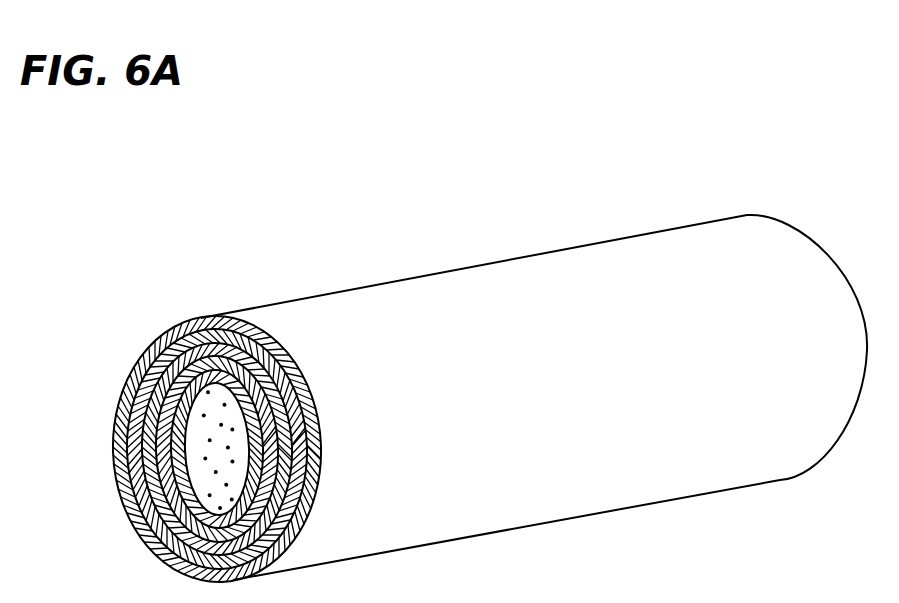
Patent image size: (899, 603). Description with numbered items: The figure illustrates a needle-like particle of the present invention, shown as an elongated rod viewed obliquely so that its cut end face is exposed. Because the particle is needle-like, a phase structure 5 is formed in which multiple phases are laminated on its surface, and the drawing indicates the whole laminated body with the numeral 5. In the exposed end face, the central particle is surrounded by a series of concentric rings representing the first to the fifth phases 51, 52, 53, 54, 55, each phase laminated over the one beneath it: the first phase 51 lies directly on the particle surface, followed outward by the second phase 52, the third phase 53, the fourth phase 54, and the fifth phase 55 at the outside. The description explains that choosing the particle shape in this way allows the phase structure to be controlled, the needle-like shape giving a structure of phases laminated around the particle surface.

The phase structure 5 is at (522, 197).
The first phase 51 is at (221, 397).
The second phase 52 is at (229, 378).
The third phase 53 is at (252, 368).
The fourth phase 54 is at (278, 375).
The fifth phase 55 is at (305, 382).